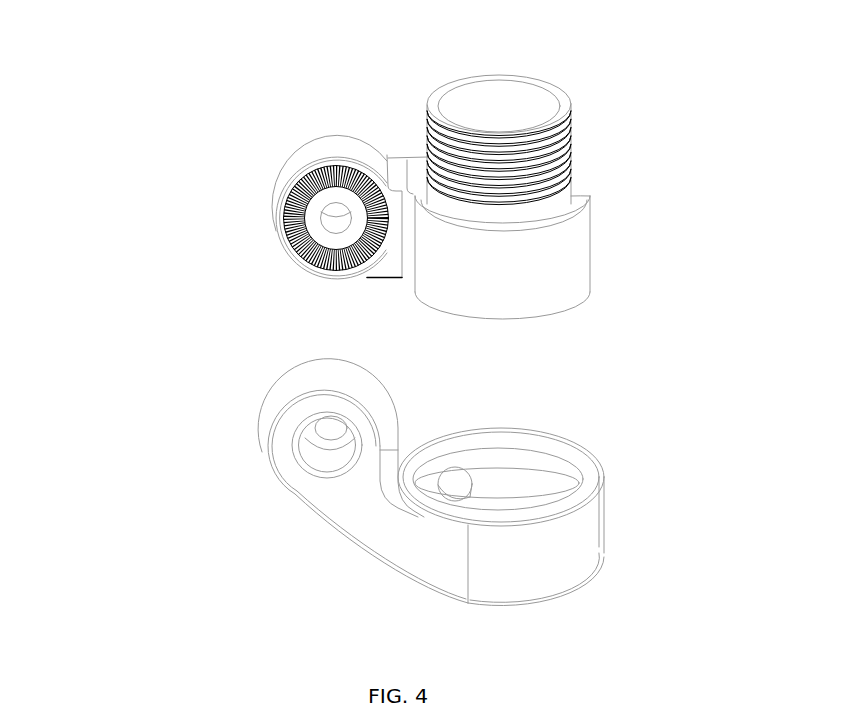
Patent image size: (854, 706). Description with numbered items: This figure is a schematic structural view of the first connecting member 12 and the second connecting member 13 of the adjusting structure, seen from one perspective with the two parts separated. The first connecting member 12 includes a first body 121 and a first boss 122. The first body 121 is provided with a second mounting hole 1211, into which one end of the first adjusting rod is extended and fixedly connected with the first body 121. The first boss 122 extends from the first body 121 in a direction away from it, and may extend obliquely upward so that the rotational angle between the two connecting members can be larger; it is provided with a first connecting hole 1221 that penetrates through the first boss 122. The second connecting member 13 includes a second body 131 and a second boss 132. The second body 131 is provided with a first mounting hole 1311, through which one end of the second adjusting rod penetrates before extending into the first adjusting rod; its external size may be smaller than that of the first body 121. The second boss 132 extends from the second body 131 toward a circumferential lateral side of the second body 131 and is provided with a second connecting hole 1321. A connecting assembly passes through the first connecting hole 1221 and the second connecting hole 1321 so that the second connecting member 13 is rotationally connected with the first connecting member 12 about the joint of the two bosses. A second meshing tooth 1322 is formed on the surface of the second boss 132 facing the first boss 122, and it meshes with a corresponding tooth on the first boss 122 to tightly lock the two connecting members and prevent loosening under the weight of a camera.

The first connecting member 12 is at (135, 323).
The first body 121 is at (592, 476).
The second mounting hole 1211 is at (532, 441).
The first boss 122 is at (318, 375).
The first connecting hole 1221 is at (328, 459).
The second connecting member 13 is at (311, 73).
The second body 131 is at (563, 257).
The first mounting hole 1311 is at (484, 98).
The second boss 132 is at (302, 154).
The second connecting hole 1321 is at (334, 233).
The second meshing tooth 1322 is at (290, 247).